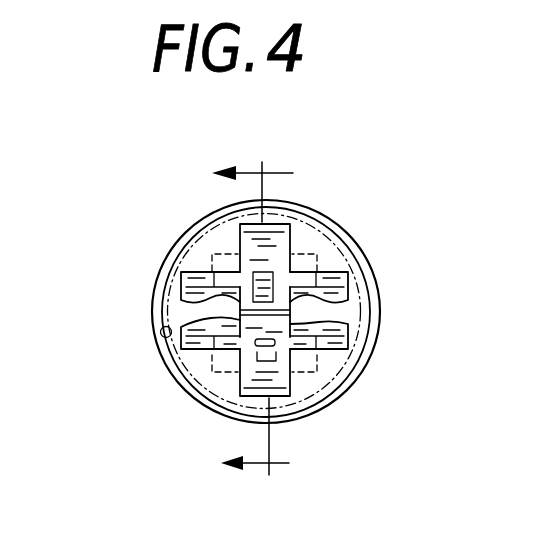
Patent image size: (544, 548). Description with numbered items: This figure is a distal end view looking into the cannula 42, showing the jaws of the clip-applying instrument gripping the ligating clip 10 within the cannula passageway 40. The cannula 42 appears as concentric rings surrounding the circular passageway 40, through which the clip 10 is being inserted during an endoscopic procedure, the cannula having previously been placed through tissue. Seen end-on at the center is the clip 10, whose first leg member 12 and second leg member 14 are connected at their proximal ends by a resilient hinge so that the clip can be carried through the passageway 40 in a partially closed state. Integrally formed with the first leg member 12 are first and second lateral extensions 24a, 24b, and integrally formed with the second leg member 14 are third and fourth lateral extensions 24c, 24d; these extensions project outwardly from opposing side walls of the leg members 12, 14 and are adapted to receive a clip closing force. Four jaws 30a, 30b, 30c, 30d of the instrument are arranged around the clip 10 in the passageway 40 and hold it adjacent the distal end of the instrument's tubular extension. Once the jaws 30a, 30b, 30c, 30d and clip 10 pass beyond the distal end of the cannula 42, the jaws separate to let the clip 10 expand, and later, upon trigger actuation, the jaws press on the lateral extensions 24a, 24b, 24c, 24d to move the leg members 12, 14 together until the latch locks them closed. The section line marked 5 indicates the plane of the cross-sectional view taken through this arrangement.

The ligating clip 10 is at (240, 232).
The first leg member 12 is at (276, 238).
The second leg member 14 is at (277, 400).
The first lateral extension 24a is at (182, 288).
The second lateral extension 24b is at (313, 273).
The third lateral extension 24c is at (223, 337).
The fourth lateral extension 24d is at (348, 338).
The jaw 30a is at (212, 244).
The jaw 30b is at (305, 241).
The jaw 30c is at (229, 383).
The jaw 30d is at (303, 382).
The passageway 40 is at (154, 328).
The cannula 42 is at (367, 294).
The section line 5- 5 is at (252, 318).